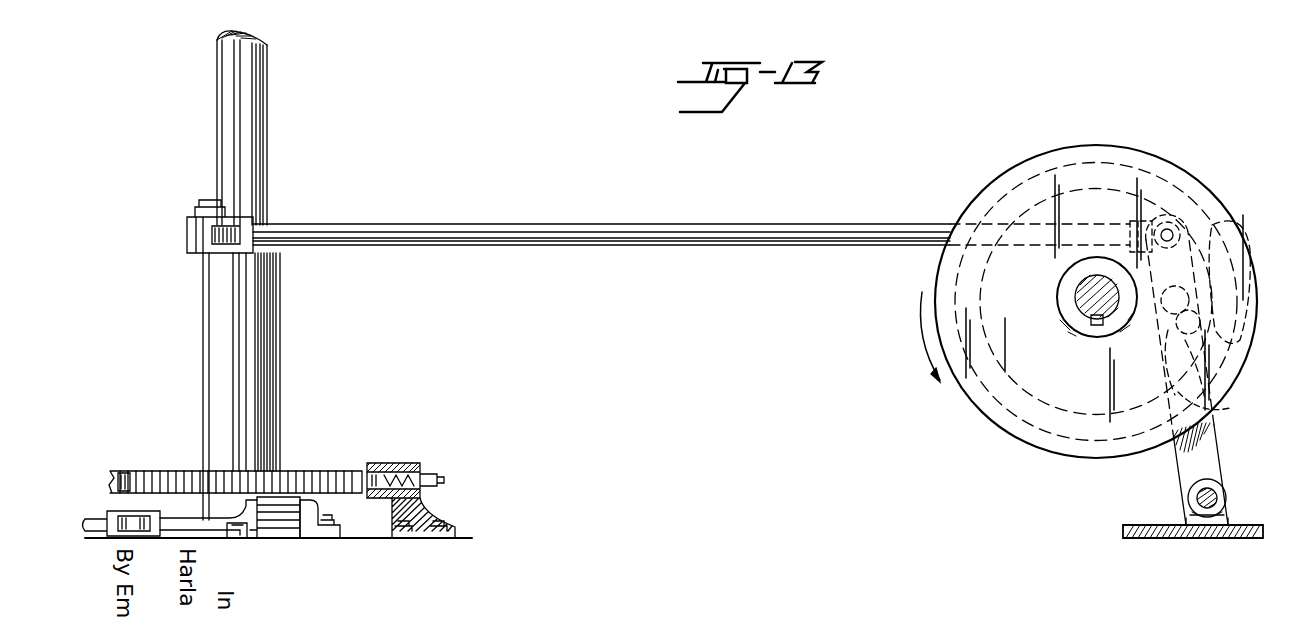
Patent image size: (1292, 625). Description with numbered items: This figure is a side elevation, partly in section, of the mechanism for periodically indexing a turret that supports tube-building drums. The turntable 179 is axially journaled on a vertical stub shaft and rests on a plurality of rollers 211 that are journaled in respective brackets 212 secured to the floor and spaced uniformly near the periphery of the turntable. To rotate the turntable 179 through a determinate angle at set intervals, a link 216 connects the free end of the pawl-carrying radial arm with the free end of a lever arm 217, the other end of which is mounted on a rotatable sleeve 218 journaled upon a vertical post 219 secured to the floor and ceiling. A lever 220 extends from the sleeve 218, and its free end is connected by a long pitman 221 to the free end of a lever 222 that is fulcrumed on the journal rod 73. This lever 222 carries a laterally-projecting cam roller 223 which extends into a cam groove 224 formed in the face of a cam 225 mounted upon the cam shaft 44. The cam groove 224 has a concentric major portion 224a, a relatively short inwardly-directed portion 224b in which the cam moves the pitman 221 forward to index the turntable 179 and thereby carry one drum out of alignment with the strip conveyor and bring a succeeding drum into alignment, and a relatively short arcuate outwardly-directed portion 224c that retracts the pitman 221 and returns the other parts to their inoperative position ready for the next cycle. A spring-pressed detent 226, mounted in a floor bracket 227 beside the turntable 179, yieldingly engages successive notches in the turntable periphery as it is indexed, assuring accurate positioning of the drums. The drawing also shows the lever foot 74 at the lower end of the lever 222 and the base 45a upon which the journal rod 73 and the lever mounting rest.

The vertical post 219 is at (268, 158).
The lever 220 is at (187, 238).
The rotatable sleeve 218 is at (278, 377).
The pitman 221 is at (607, 232).
The turntable 179 is at (318, 452).
The cam 225 is at (126, 471).
The link 216 is at (92, 518).
The lever arm 217 is at (182, 518).
The roller 211 is at (270, 535).
The bracket 212 is at (317, 534).
The spring-pressed detent 226 is at (386, 464).
The floor bracket 227 is at (425, 520).
The cam groove 224 is at (1050, 428).
The concentric major portion 224a is at (958, 322).
The inwardly-directed portion 224b is at (1183, 210).
The outwardly-directed portion 224c is at (1214, 424).
The cam roller 223 is at (1200, 342).
The cam shaft 44 is at (1092, 304).
The lever 222 is at (1185, 462).
The lever foot 74 is at (1186, 516).
The journal rod 73 is at (1218, 496).
The base 45a is at (1210, 540).